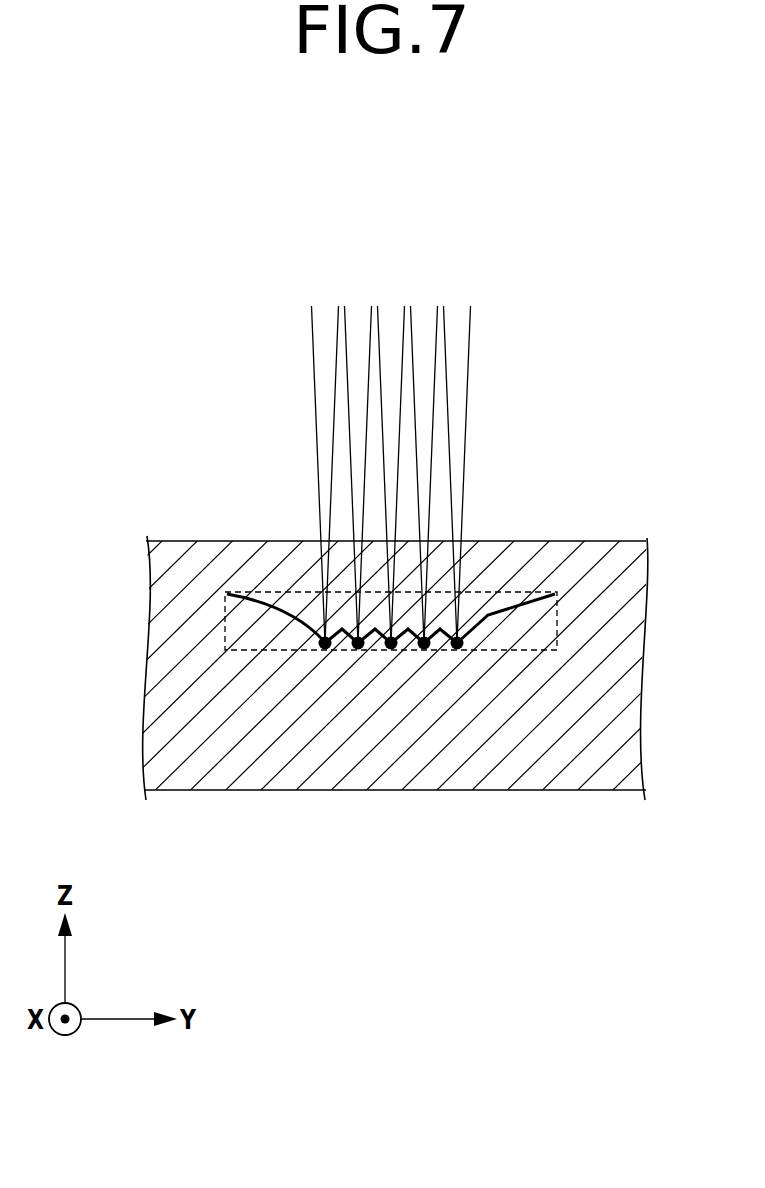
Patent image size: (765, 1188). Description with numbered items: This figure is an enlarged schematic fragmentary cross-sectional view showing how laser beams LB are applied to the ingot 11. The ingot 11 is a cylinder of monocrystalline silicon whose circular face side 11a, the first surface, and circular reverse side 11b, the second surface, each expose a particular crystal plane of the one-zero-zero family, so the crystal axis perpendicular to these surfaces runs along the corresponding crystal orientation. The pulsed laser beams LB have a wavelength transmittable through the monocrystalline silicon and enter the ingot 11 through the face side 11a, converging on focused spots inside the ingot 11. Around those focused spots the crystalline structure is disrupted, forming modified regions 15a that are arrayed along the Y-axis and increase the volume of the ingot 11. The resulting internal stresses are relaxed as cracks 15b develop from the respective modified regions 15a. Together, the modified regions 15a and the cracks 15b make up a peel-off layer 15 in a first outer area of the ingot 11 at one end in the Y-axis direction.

The ingot 11 is at (188, 496).
The face side 11a is at (602, 541).
The reverse side 11b is at (605, 791).
The peel-off layer 15 is at (487, 592).
The modified regions 15a is at (362, 650).
The cracks 15b is at (260, 605).
The laser beam LB is at (487, 293).